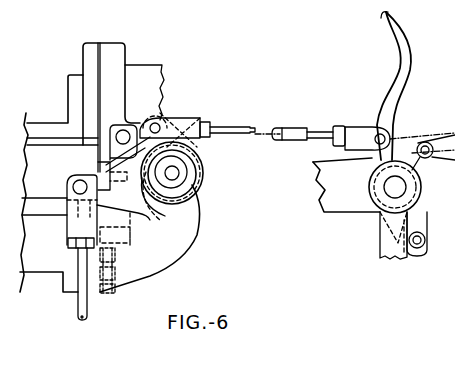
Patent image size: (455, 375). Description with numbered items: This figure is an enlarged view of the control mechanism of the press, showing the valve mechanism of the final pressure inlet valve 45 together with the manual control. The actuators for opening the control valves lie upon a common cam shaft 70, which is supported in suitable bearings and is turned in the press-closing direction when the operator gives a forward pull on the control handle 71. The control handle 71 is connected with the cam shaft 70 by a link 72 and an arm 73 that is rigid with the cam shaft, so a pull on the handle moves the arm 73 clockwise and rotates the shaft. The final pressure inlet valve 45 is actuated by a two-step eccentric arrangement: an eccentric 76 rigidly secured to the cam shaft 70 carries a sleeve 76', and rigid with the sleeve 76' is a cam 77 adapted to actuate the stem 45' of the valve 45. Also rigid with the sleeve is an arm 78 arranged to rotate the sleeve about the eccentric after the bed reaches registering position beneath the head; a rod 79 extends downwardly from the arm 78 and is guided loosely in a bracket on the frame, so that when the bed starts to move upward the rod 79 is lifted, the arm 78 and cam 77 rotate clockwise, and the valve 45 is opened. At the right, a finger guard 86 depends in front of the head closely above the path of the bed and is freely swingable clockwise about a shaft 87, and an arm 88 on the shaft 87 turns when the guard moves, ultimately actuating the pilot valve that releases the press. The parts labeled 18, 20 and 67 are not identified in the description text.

The pivot bracket 18 is at (110, 131).
The housing 20 is at (338, 194).
The final pressure inlet valve 45 is at (106, 196).
The stem 45' is at (90, 170).
The frame member 67 is at (148, 80).
The cam shaft 70 is at (179, 173).
The control handle 71 is at (408, 32).
The link 72 is at (294, 133).
The arm 73 is at (157, 127).
The eccentric 76 is at (193, 185).
The sleeve 76' is at (160, 211).
The cam 77 is at (122, 253).
The arm 78 is at (107, 197).
The rod 79 is at (85, 308).
The finger guard 86 is at (385, 248).
The shaft 87 is at (393, 186).
The arm 88 is at (418, 229).